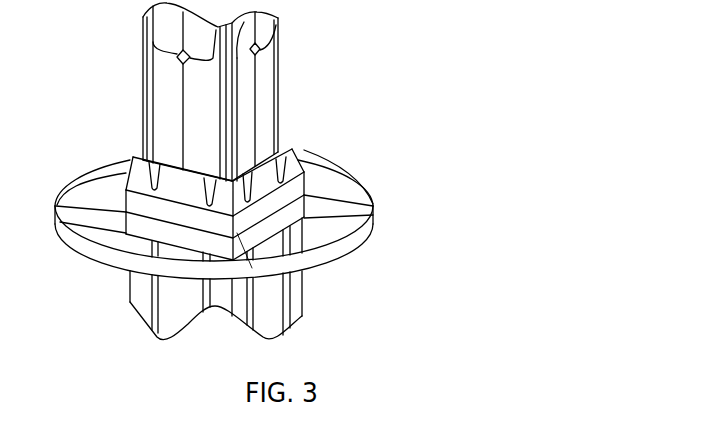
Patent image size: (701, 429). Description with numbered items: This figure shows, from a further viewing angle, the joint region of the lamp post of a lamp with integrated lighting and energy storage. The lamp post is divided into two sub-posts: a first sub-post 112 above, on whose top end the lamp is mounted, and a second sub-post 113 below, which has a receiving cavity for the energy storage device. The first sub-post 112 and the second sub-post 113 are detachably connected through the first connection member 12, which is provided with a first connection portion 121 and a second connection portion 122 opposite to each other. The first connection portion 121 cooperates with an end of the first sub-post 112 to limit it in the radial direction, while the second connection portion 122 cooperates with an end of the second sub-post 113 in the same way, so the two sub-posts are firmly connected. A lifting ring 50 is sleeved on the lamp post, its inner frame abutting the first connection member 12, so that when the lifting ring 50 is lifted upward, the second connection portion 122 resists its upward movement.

The lifting ring 50 is at (92, 172).
The first sub-post 112 is at (272, 63).
The first connection member 12 is at (298, 201).
The first connection portion 121 is at (289, 156).
The second connection portion 122 is at (282, 197).
The second sub-post 113 is at (258, 312).